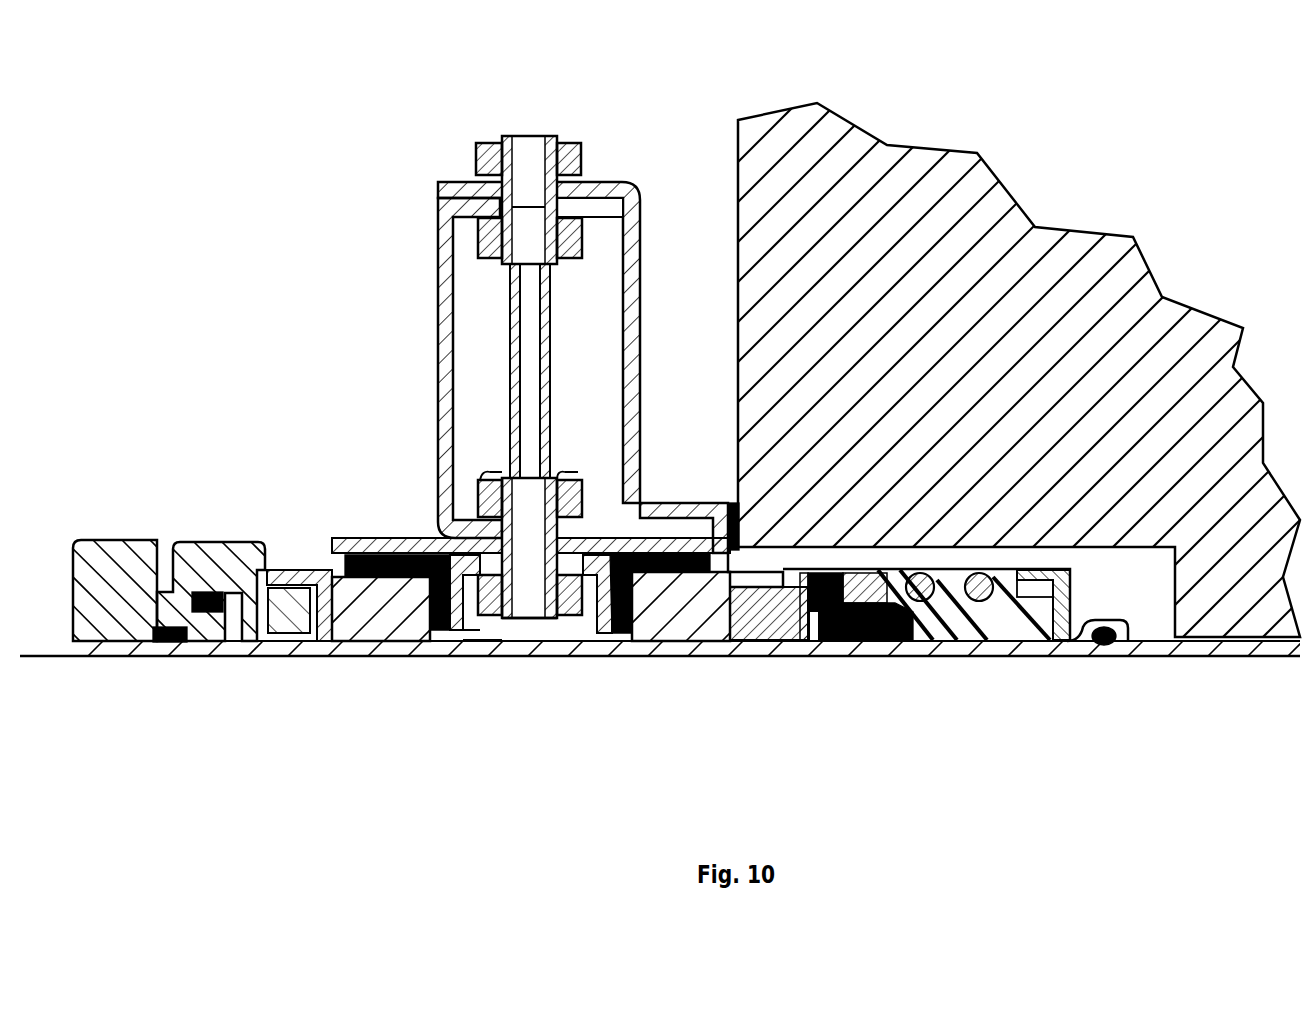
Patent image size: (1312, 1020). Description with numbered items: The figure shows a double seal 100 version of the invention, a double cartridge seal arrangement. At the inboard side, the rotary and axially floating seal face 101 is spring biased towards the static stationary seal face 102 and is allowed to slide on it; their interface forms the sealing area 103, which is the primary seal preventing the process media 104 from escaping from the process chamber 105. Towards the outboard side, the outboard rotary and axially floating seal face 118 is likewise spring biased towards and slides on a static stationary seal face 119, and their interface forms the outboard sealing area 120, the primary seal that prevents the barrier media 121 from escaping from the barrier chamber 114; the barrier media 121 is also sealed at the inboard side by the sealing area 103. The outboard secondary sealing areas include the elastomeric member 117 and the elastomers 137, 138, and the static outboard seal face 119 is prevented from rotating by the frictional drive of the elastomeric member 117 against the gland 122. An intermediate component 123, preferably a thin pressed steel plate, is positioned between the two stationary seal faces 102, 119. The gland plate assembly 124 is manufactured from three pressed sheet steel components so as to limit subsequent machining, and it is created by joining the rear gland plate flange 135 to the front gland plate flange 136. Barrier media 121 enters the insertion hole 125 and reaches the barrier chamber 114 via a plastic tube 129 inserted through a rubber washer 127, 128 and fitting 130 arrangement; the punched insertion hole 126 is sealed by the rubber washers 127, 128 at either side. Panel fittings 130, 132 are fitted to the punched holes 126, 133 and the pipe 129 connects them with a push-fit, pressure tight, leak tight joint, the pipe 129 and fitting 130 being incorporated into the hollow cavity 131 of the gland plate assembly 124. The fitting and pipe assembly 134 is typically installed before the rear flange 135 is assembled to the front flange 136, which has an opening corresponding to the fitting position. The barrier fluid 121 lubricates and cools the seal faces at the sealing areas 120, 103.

The double seal 100 is at (200, 313).
The rotary and axially floating seal face 101 is at (787, 645).
The static stationary seal face 102 is at (665, 625).
The sealing area 103 is at (735, 641).
The process media 104 is at (1137, 580).
The process chamber 105 is at (1130, 380).
The barrier chamber 114 is at (470, 641).
The elastomeric member 117 is at (330, 562).
The outboard rotary and axially floating seal face 118 is at (183, 541).
The static stationary seal face 119 is at (355, 630).
The sealing area 120 is at (300, 608).
The barrier media 121 is at (498, 632).
The gland 122 is at (350, 540).
The intermediate component 123 is at (440, 625).
The gland plate assembly 124 is at (454, 166).
The insertion hole 125 is at (540, 620).
The insertion hole 126 is at (487, 527).
The rubber washer 127 is at (583, 503).
The rubber washer 128 is at (575, 618).
The plastic tube 129 is at (513, 338).
The fitting 130 is at (480, 483).
The hollow cavity 131 is at (478, 352).
The panel fitting 132 is at (442, 207).
The punched hole 133 is at (582, 180).
The fitting and pipe assembly 134 is at (549, 292).
The rear gland plate flange 135 is at (640, 318).
The front gland plate flange 136 is at (438, 263).
The elastomer 137 is at (170, 635).
The elastomer 138 is at (210, 608).